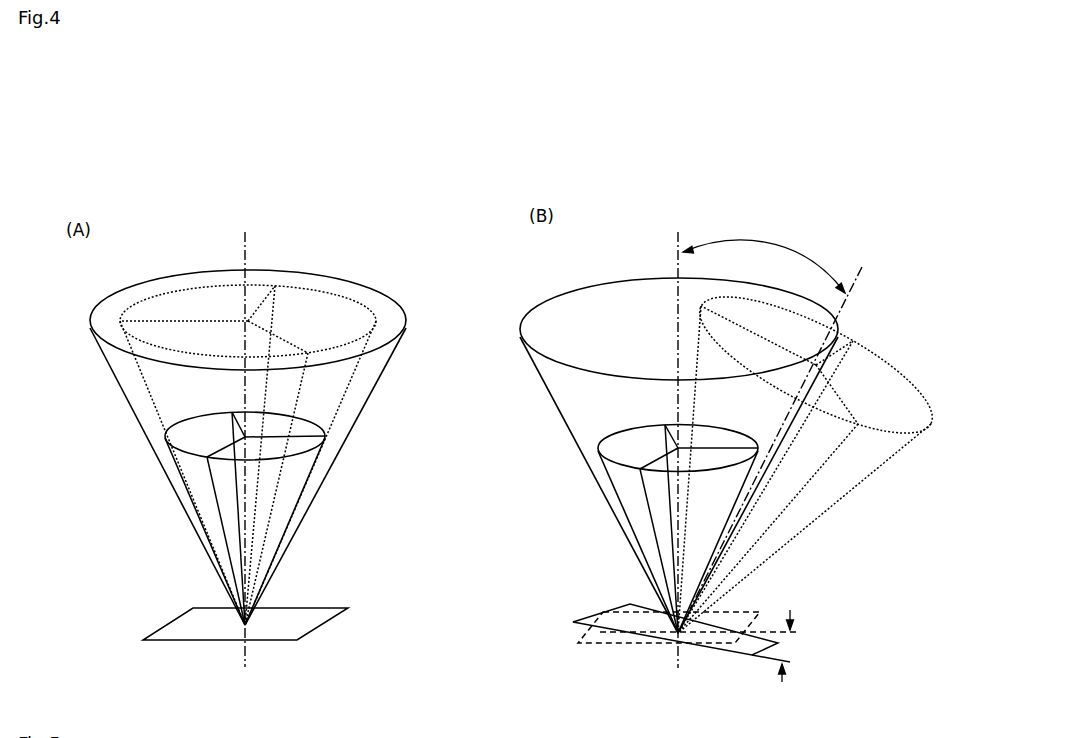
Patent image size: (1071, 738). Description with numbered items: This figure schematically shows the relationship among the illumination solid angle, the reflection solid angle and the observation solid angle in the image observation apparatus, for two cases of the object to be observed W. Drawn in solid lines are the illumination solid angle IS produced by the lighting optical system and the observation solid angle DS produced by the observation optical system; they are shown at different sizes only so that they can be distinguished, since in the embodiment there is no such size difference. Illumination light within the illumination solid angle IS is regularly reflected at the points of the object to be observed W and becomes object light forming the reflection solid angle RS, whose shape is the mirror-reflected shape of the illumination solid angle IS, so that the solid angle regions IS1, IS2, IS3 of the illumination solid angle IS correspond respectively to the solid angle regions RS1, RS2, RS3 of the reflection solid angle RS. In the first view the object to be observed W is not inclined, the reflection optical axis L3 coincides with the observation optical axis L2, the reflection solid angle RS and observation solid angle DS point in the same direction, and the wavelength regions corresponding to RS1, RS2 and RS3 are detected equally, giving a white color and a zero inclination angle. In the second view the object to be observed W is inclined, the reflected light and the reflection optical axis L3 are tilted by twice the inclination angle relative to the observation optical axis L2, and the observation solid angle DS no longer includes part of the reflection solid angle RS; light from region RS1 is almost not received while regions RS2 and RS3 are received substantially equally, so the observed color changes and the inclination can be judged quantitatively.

The observation solid angle DS is at (133, 428).
The reflection solid angle RS is at (363, 370).
The solid angle region RS1 is at (340, 305).
The solid angle region RS2 is at (158, 337).
The solid angle region RS3 is at (202, 297).
The illumination solid angle IS is at (285, 528).
The solid angle region IS1 is at (205, 423).
The solid angle region IS2 is at (302, 425).
The solid angle region IS3 is at (302, 446).
The object to be observed W is at (190, 628).
The observation optical axis L2 is at (496, 452).
The reflection optical axis L3 is at (787, 431).